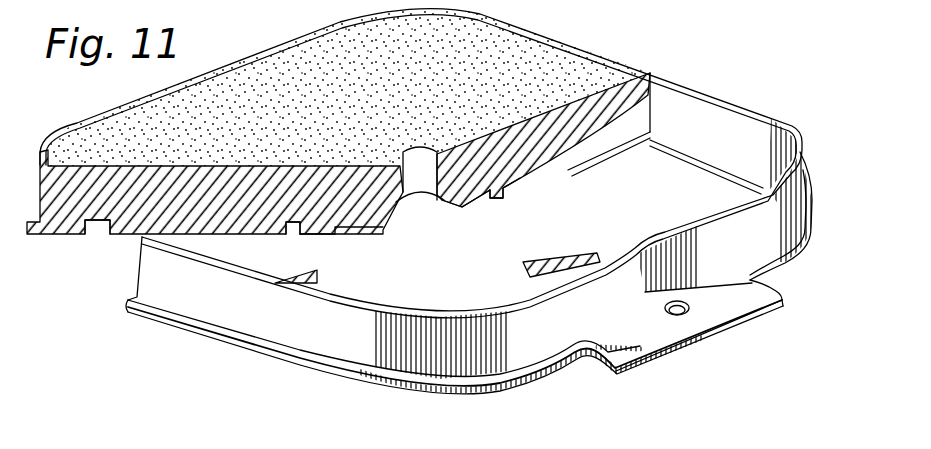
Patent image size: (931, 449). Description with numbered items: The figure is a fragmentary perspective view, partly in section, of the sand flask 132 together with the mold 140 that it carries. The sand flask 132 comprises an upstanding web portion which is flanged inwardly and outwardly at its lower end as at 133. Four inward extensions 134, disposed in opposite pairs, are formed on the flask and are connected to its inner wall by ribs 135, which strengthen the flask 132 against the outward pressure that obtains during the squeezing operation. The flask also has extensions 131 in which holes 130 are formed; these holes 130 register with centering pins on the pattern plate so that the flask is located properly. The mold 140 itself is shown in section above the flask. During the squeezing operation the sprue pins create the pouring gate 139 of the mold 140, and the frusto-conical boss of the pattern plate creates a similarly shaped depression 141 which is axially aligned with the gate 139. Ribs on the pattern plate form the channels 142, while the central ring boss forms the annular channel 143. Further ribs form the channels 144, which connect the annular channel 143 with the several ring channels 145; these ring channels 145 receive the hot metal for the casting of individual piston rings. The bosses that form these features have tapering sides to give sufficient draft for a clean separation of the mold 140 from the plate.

The holes 130 is at (688, 316).
The extensions 131 is at (776, 300).
The sand flask 132 is at (515, 336).
The flange 133 is at (468, 390).
The inward extensions 134 is at (617, 163).
The ribs 135 is at (640, 110).
The pouring gate 139 is at (418, 180).
The mold 140 is at (578, 72).
The depression 141 is at (440, 205).
The channels 142 is at (470, 207).
The annular channel 143 is at (498, 196).
The channels 144 is at (318, 237).
The ring channels 145 is at (95, 237).